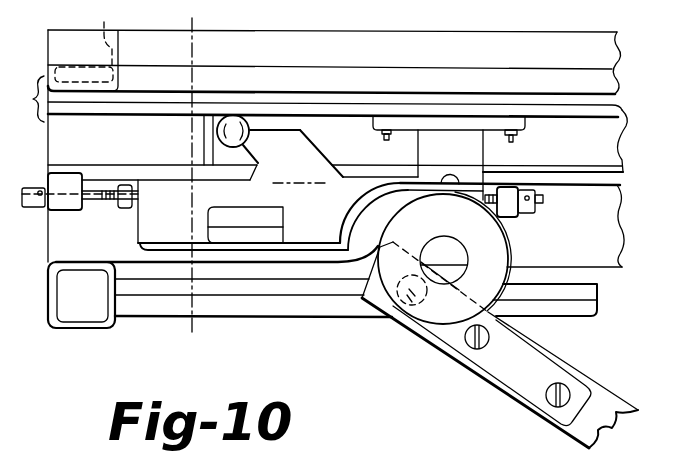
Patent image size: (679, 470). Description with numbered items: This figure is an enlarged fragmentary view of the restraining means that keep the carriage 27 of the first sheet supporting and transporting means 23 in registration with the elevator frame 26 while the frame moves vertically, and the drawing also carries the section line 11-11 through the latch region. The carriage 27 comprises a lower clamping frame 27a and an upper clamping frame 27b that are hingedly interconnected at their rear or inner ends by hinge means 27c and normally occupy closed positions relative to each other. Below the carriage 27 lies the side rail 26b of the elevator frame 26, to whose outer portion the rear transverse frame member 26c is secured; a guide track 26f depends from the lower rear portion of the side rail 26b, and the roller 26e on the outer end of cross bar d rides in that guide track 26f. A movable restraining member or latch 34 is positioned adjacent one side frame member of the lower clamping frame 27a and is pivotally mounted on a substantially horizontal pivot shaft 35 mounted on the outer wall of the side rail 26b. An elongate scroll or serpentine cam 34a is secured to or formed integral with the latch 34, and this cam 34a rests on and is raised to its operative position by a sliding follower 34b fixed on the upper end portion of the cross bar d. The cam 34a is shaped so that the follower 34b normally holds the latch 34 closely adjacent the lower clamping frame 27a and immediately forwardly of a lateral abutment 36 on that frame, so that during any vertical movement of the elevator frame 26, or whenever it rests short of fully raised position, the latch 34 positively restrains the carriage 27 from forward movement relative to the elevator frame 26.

The section line 11- 11 is at (192, 18).
The sheet supporting and transporting means 23 is at (596, 30).
The carriage 27 is at (622, 60).
The lower clamping frame 27a is at (588, 152).
The upper clamping frame 27b is at (412, 61).
The hinge means 27c is at (104, 22).
The latch 34 is at (232, 116).
The scroll cam 34a is at (153, 233).
The sliding follower 34b is at (490, 242).
The pivot shaft 35 is at (103, 197).
The lateral abutment 36 is at (204, 133).
The elevator frame 26 is at (87, 333).
The side rail 26b is at (604, 223).
The rear transverse frame member 26c is at (56, 329).
The roller 26e is at (413, 324).
The guide track 26f is at (320, 306).
The cross bar d is at (556, 426).